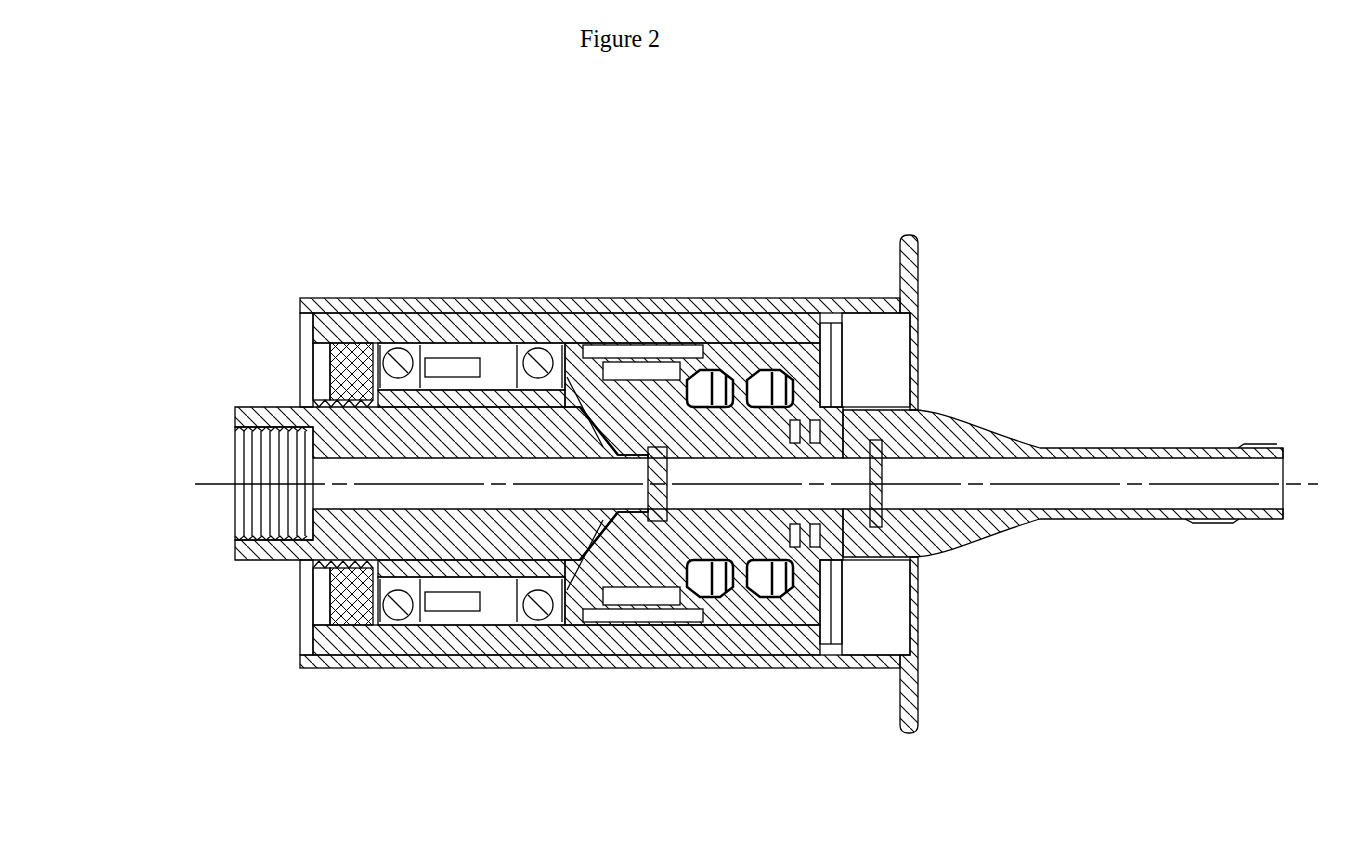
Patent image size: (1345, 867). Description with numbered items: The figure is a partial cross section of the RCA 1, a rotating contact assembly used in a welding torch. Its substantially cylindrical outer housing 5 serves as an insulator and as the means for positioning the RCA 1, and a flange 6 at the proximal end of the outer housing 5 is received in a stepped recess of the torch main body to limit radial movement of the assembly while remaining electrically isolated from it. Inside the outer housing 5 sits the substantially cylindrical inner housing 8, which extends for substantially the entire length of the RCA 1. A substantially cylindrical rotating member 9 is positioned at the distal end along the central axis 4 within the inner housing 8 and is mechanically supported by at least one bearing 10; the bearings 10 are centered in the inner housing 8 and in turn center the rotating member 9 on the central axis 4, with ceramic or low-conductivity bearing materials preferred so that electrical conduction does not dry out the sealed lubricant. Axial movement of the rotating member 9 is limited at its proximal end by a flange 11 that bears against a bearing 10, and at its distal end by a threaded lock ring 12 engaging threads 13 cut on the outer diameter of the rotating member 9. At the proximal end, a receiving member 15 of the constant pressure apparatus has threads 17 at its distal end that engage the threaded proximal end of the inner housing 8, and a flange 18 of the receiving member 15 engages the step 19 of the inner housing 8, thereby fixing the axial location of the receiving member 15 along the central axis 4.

The RCA 1 is at (612, 252).
The central axis 4 is at (200, 460).
The outer housing 5 is at (300, 296).
The flange 6 is at (926, 275).
The inner housing 8 is at (420, 655).
The rotating member 9 is at (271, 568).
The bearing 10 is at (532, 349).
The flange 11 is at (580, 622).
The threaded lock ring 12 is at (332, 645).
The threads 13 is at (300, 590).
The receiving member 15 is at (973, 553).
The threads 17 is at (800, 625).
The flange 18 is at (849, 622).
The step 19 is at (857, 329).